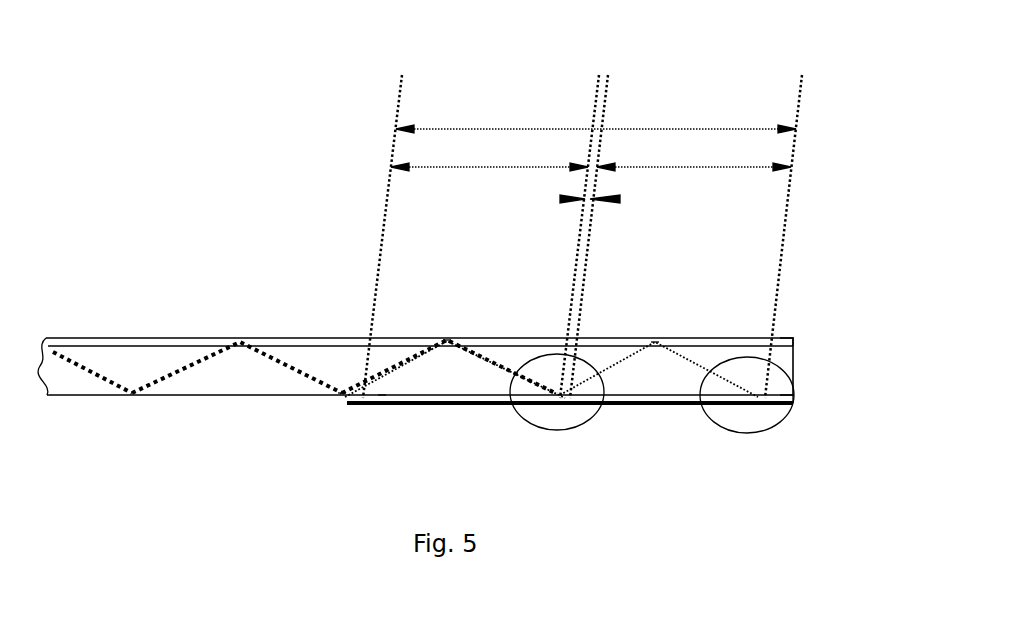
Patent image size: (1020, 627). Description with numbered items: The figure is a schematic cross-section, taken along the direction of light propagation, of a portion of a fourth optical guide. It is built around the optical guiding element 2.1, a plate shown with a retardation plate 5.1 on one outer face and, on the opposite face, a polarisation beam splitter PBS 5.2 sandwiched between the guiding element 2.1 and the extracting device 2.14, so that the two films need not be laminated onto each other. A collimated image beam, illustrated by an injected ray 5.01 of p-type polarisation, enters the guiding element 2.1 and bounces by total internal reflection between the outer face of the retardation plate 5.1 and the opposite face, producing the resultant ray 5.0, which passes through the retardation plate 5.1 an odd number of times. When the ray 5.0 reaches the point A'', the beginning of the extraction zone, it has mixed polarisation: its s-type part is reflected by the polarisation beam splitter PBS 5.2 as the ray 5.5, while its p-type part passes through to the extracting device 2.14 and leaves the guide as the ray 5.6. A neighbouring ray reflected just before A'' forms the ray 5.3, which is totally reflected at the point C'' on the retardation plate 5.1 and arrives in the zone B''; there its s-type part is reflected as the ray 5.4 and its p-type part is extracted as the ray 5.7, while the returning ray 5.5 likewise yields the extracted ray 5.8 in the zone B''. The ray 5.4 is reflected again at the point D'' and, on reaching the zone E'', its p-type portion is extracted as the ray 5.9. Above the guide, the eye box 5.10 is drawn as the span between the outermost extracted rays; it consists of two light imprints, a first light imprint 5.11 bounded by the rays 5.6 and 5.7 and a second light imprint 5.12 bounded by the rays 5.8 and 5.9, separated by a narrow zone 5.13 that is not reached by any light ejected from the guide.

The optical guiding element 2.1 is at (223, 390).
The extracting device 2.14 is at (655, 406).
The ray 5.01 is at (66, 352).
The resultant ray 5.0 is at (205, 342).
The ray 5.3 is at (405, 352).
The ray 5.4 is at (617, 340).
The ray 5.5 is at (382, 394).
The retardation plate 5.1 is at (795, 340).
The polarisation beam splitter PBS 5.2 is at (795, 397).
The ray 5.6 is at (400, 95).
The ray 5.7 is at (600, 93).
The ray 5.8 is at (610, 93).
The ray 5.9 is at (802, 102).
The eye box 5.10 is at (452, 128).
The light imprint 5.11 is at (477, 167).
The light imprint 5.12 is at (728, 167).
The zone 5.13 is at (590, 200).
The point A'' is at (314, 423).
The zone B'' is at (557, 418).
The point C'' is at (469, 312).
The point D'' is at (676, 315).
The zone E'' is at (747, 421).